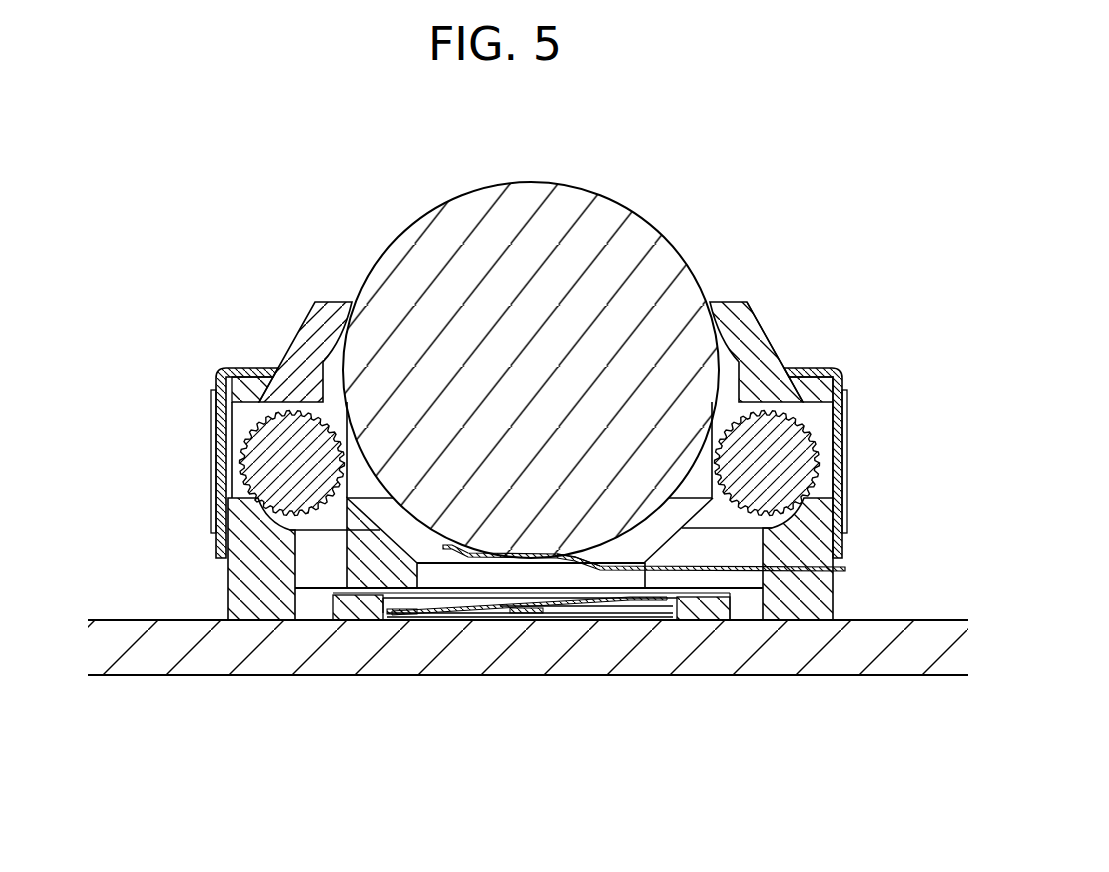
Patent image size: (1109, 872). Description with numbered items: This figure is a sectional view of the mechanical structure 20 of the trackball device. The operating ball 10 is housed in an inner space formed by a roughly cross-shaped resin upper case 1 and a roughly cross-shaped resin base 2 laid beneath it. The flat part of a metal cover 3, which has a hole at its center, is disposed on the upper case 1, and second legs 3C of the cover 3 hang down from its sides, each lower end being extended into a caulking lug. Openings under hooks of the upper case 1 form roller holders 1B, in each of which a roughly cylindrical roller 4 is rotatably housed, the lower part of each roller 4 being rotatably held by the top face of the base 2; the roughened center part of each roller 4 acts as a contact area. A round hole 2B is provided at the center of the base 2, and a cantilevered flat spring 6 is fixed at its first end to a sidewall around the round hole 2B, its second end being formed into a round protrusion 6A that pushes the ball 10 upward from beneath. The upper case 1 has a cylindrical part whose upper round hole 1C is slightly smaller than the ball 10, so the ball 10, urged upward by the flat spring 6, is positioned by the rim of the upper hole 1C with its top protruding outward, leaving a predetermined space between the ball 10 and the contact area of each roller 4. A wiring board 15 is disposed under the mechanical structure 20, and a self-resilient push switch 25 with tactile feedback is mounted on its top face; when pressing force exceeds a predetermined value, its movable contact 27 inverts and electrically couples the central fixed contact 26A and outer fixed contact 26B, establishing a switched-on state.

The upper case 1 is at (566, 382).
The roller holder 1B is at (813, 415).
The upper round hole 1C is at (349, 294).
The base 2 is at (480, 559).
The round hole 2B is at (432, 573).
The cover 3 is at (220, 370).
The second leg 3C is at (223, 420).
The roller 4 is at (253, 473).
The flat spring 6 is at (644, 647).
The round protrusion 6A is at (560, 567).
The operating ball 10 is at (622, 230).
The wiring board 15 is at (218, 658).
The mechanical structure 20 is at (792, 337).
The push switch 25 is at (529, 703).
The central fixed contact 26A is at (520, 607).
The outer fixed contact 26B is at (377, 681).
The movable contact 27 is at (463, 602).